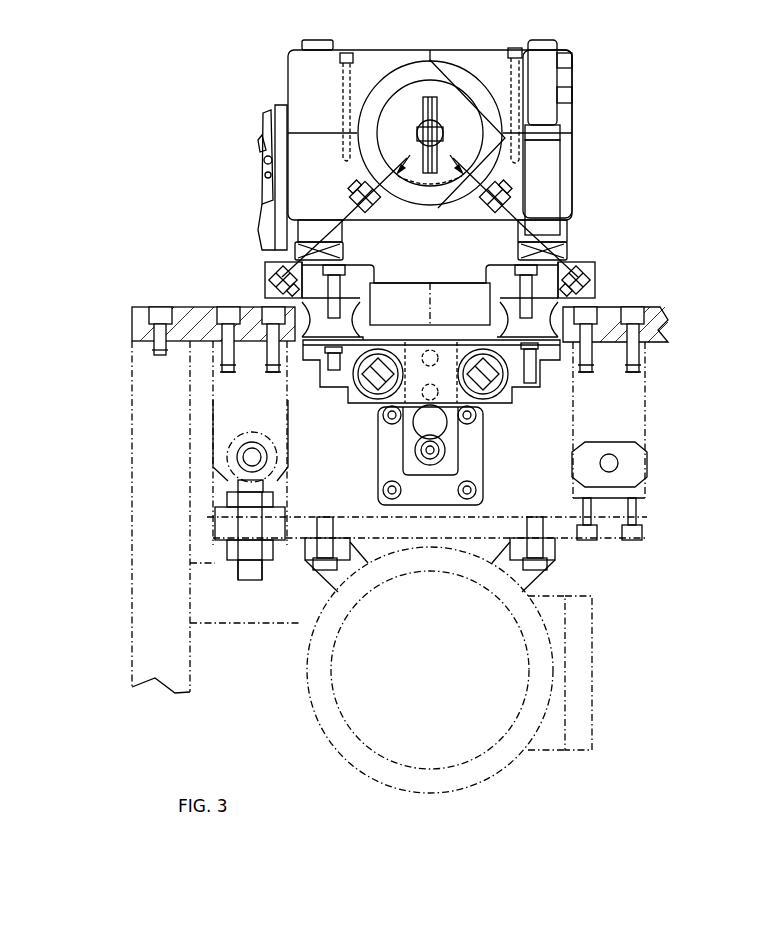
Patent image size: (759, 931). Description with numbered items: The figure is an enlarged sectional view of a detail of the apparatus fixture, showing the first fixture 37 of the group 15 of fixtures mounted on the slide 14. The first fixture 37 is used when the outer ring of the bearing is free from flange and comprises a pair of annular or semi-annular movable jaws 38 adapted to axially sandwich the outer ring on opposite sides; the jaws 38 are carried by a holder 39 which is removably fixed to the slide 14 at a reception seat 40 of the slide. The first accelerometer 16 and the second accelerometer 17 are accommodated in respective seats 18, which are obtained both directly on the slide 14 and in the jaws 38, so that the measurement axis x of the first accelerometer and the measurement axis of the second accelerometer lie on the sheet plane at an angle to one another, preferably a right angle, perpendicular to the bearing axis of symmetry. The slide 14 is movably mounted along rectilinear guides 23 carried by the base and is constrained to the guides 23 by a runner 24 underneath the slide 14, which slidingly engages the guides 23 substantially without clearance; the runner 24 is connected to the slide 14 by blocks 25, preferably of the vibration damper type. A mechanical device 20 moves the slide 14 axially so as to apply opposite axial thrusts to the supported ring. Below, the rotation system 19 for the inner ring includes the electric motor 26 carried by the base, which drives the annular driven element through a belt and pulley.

The slide 14 is at (598, 268).
The group of fixtures 15 is at (602, 121).
The first accelerometer 16 is at (360, 193).
The second accelerometer 17 is at (500, 200).
The seats 18 is at (265, 274).
The rotation system 19 is at (305, 702).
The mechanical device 20 is at (495, 475).
The rectilinear guides 23 is at (373, 380).
The runner 24 is at (516, 382).
The blocks 25 is at (512, 300).
The electric motor 26 is at (305, 663).
The first fixture 37 is at (219, 181).
The movable jaws 38 is at (365, 65).
The holder 39 is at (552, 65).
The reception seat 40 is at (285, 251).
The measurement axis x is at (240, 297).